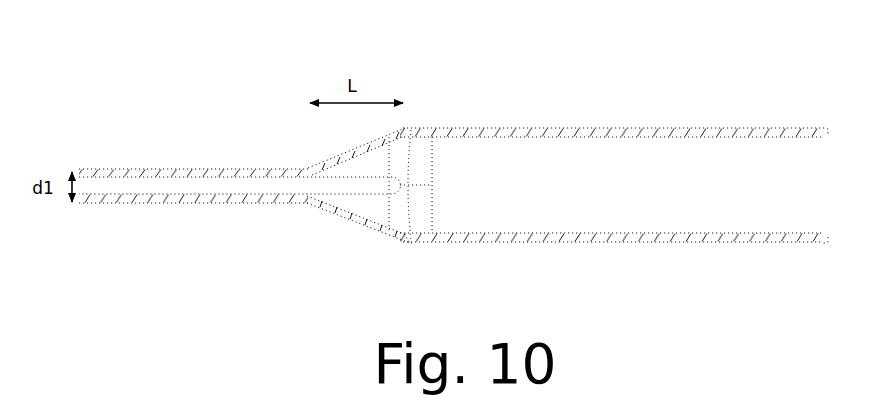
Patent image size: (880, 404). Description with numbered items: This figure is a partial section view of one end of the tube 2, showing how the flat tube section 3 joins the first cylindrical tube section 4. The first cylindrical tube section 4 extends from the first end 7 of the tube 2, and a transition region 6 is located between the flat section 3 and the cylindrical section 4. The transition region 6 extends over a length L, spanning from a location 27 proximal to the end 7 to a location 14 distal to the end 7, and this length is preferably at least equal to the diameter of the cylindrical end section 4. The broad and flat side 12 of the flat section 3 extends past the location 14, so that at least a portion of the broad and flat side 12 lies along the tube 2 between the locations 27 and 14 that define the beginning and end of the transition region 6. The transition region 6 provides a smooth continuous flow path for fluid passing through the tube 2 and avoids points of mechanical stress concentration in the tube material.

The tube 2 is at (553, 78).
The flat tube section 3 is at (180, 157).
The first cylindrical tube section 4 is at (602, 127).
The transition region 6 is at (360, 227).
The first end 7 is at (828, 247).
The broad and flat side 12 is at (107, 170).
The location 14 is at (307, 168).
The location 27 is at (405, 244).